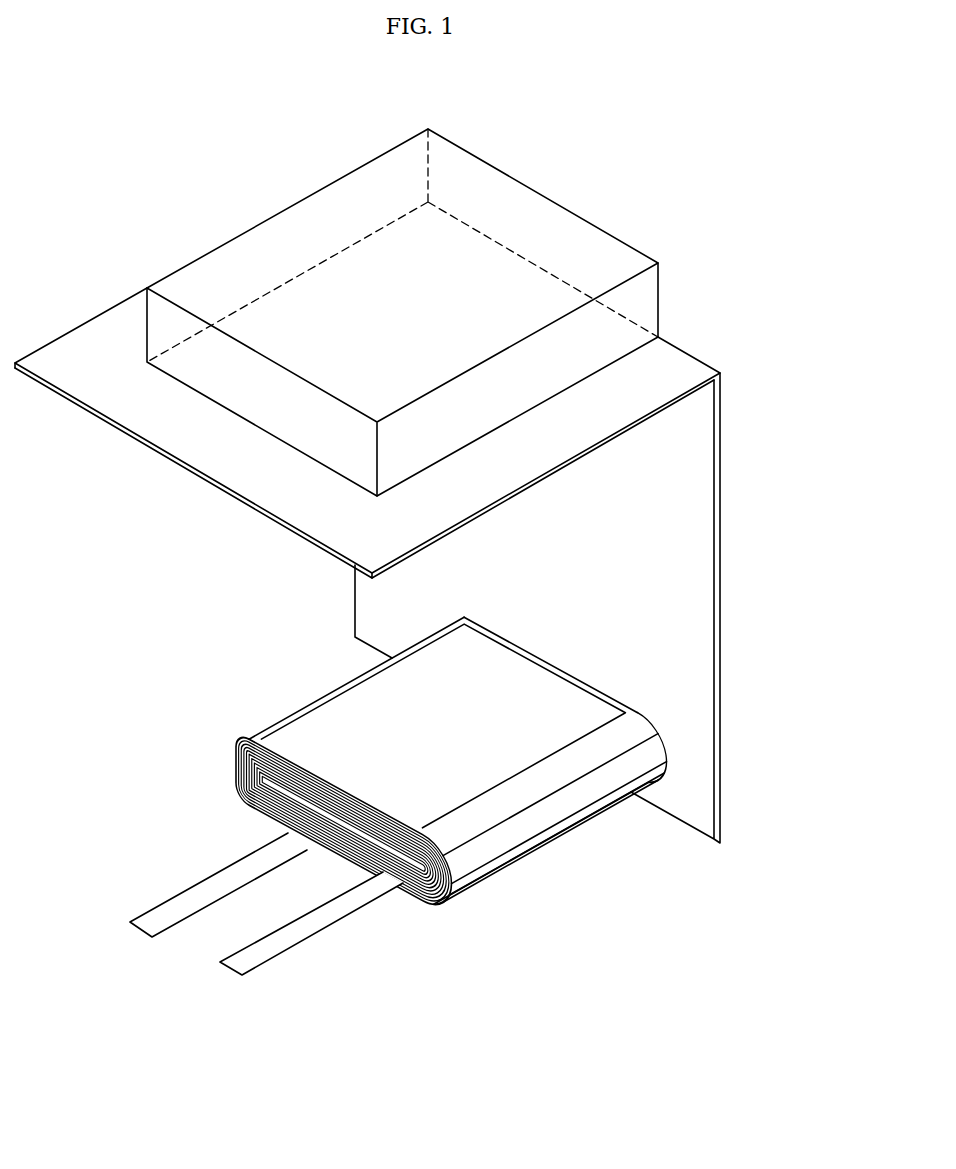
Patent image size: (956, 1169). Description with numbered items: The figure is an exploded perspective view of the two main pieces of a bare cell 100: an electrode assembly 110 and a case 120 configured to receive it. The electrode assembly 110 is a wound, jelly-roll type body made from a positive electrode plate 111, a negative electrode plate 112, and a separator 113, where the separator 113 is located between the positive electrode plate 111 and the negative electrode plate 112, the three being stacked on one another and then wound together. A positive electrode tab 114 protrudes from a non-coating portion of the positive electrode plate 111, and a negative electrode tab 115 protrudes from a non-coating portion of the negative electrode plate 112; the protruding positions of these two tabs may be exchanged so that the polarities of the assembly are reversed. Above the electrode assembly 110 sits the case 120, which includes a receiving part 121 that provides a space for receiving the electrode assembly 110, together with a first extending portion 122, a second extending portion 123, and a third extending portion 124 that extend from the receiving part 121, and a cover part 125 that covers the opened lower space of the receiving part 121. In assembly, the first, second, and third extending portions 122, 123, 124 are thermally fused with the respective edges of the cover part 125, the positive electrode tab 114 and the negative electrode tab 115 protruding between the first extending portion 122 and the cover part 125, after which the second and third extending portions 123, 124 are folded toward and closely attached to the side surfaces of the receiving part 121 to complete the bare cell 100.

The bare cell 100 is at (249, 176).
The electrode assembly 110 is at (406, 930).
The positive electrode plate 111 is at (375, 807).
The negative electrode plate 112 is at (352, 800).
The separator 113 is at (340, 797).
The positive electrode tab 114 is at (168, 907).
The negative electrode tab 115 is at (263, 948).
The case 120 is at (636, 238).
The receiving part 121 is at (575, 235).
The first extending portion 122 is at (205, 441).
The second extending portion 123 is at (105, 337).
The third extending portion 124 is at (587, 437).
The cover part 125 is at (495, 695).